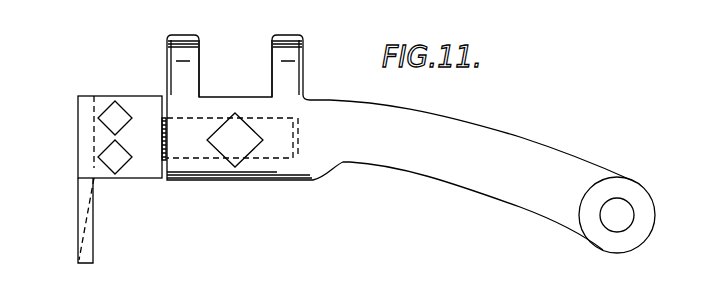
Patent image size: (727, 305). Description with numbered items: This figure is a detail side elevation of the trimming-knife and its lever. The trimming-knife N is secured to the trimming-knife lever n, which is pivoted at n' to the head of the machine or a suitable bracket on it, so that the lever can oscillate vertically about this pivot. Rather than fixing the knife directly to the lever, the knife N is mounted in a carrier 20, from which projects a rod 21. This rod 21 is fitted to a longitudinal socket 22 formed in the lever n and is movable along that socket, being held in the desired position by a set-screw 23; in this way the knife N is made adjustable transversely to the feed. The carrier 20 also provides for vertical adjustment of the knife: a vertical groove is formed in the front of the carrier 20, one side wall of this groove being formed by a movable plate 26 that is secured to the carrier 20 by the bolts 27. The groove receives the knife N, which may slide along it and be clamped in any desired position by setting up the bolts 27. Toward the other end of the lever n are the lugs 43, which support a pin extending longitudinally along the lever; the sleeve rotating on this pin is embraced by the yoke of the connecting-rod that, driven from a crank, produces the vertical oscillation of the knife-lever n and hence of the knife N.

The carrier 20 is at (140, 89).
The rod 21 is at (163, 141).
The longitudinal socket 22 is at (299, 147).
The set-screw 23 is at (235, 140).
The movable plate 26 is at (114, 210).
The bolts 27 is at (115, 137).
The lugs 43 is at (222, 70).
The trimming-knife N is at (73, 223).
The trimming-knife lever n is at (412, 140).
The pivot n' is at (617, 215).